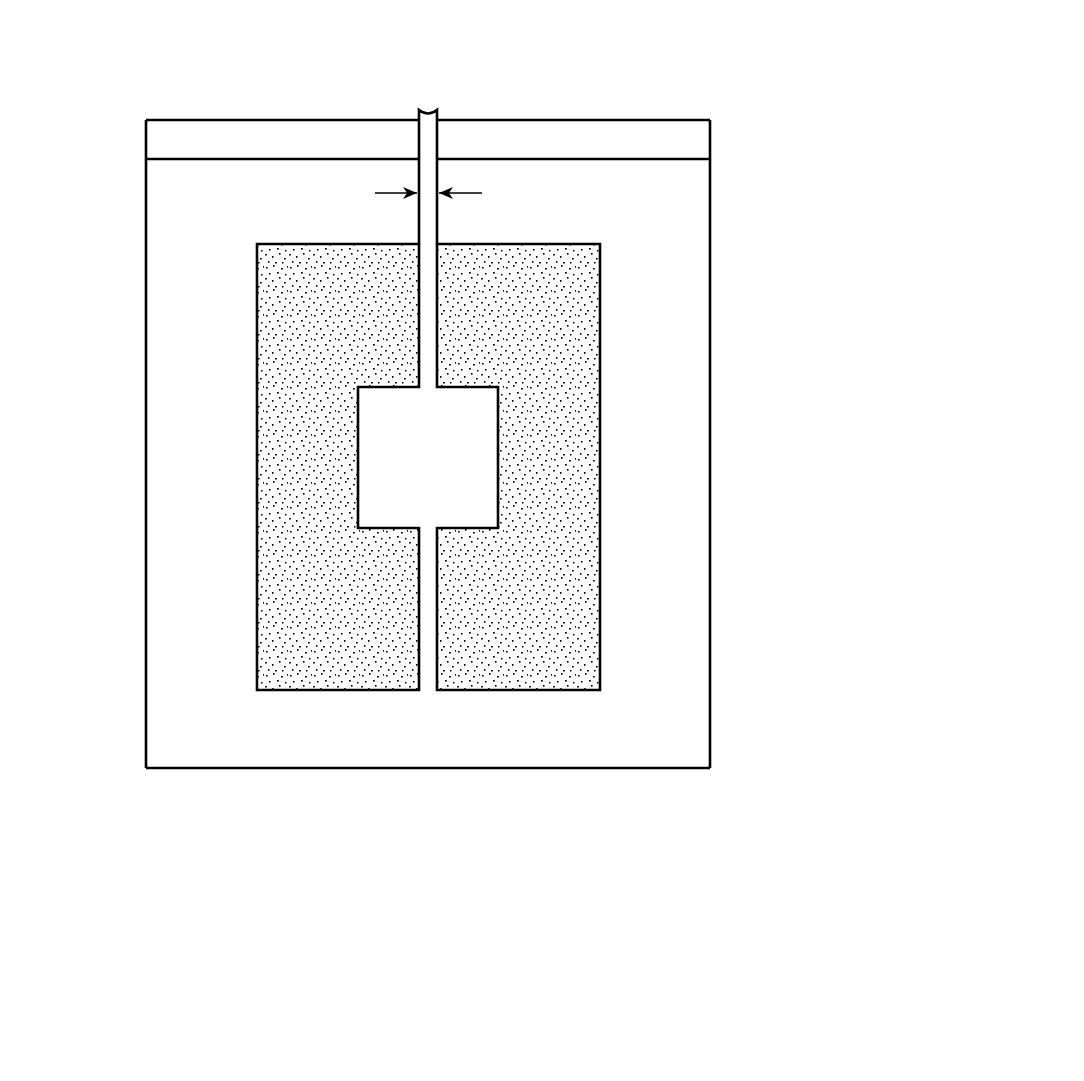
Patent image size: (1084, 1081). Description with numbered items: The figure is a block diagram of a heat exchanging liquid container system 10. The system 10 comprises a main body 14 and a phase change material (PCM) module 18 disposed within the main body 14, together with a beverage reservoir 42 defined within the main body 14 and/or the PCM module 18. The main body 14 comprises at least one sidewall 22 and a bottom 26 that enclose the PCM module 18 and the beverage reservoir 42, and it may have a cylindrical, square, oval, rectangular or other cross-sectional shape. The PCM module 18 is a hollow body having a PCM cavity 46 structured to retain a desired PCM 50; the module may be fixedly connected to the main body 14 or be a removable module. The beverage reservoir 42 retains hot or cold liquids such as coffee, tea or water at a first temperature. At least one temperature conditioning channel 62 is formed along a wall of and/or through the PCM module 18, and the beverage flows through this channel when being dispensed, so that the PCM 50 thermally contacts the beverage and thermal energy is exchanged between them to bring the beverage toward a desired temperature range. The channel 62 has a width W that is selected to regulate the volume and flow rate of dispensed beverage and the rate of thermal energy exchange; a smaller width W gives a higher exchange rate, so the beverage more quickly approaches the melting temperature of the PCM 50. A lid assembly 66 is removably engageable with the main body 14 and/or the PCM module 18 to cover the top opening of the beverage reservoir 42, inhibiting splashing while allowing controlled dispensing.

The container system 10 is at (752, 111).
The main body 14 is at (714, 420).
The phase change material (PCM) module 18 is at (602, 410).
The sidewall 22 is at (146, 495).
The bottom 26 is at (445, 770).
The beverage reservoir 42 is at (413, 478).
The PCM cavity 46 is at (294, 603).
The PCM 50 is at (310, 367).
The temperature conditioning channel 62 is at (427, 284).
The lid assembly 66 is at (553, 137).
The width W is at (415, 192).